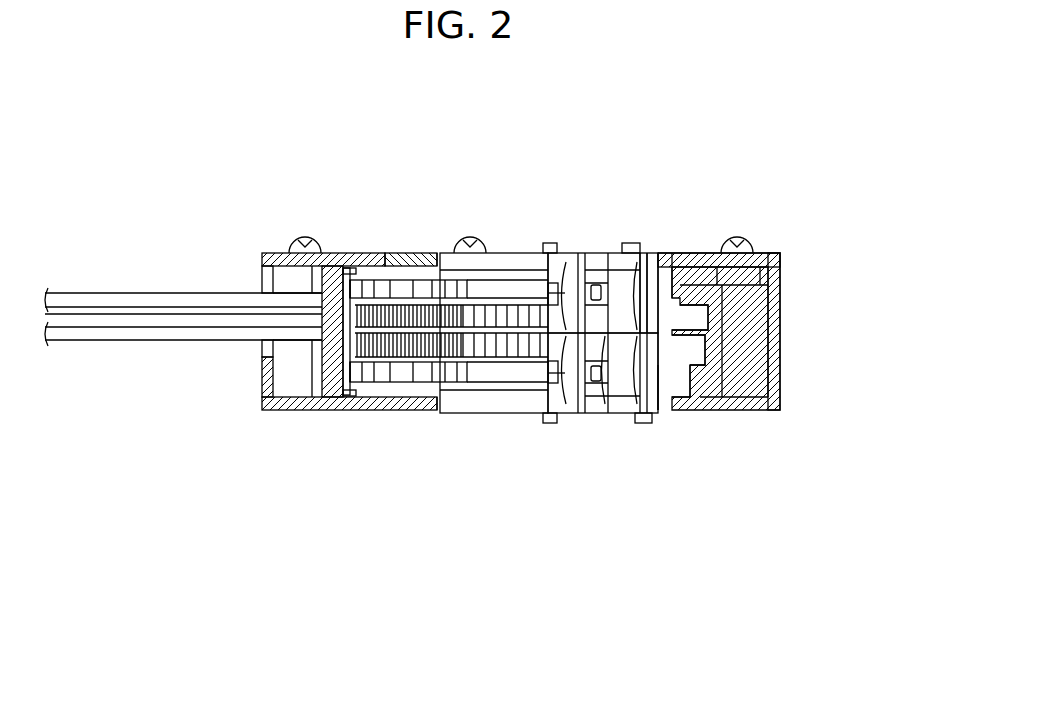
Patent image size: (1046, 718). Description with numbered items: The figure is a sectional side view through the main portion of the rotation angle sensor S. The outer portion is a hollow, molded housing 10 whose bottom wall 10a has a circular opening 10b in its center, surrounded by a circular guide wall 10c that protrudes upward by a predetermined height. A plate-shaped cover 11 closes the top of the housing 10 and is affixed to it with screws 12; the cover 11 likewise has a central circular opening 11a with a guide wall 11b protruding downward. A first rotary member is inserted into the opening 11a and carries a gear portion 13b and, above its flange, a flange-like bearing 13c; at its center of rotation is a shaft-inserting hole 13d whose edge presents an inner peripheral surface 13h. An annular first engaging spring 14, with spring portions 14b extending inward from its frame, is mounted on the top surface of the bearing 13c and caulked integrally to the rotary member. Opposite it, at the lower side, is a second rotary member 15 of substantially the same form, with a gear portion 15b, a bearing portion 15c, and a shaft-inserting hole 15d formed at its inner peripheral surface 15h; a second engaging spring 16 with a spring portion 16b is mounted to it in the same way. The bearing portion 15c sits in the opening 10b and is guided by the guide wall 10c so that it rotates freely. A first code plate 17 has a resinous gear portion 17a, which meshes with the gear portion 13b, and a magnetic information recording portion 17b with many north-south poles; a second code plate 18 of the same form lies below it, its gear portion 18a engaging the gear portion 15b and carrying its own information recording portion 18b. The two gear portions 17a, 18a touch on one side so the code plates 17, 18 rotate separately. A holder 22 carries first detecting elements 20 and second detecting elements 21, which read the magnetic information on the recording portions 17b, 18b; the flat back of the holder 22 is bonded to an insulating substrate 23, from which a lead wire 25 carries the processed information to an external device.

The rotation angle sensor S is at (320, 188).
The housing 10 is at (792, 372).
The bottom wall 10a is at (762, 408).
The opening 10b is at (657, 408).
The guide wall 10c is at (695, 400).
The cover 11 is at (502, 255).
The opening 11a is at (672, 290).
The guide wall 11b is at (700, 268).
The screws 12 is at (290, 247).
The gear portion 13b is at (708, 320).
The bearing 13c is at (652, 300).
The shaft-inserting hole 13d is at (562, 298).
The inner peripheral surface 13h is at (622, 262).
The first engaging spring 14 is at (527, 250).
The spring portions 14b is at (598, 262).
The second rotary member 15 is at (528, 410).
The gear portion 15b is at (706, 350).
The bearing portion 15c is at (685, 408).
The shaft-inserting hole 15d is at (570, 408).
The inner peripheral surface 15h is at (630, 404).
The second engaging spring 16 is at (500, 420).
The spring portion 16b is at (598, 404).
The first code plate 17 is at (350, 318).
The gear portion 17a is at (427, 272).
The information recording portion 17b is at (378, 275).
The second code plate 18 is at (350, 348).
The gear portion 18a is at (424, 403).
The information recording portion 18b is at (377, 405).
The first detecting elements 20 is at (352, 268).
The second detecting elements 21 is at (358, 400).
The holder 22 is at (338, 403).
The substrate 23 is at (303, 400).
The lead wire 25 is at (150, 300).